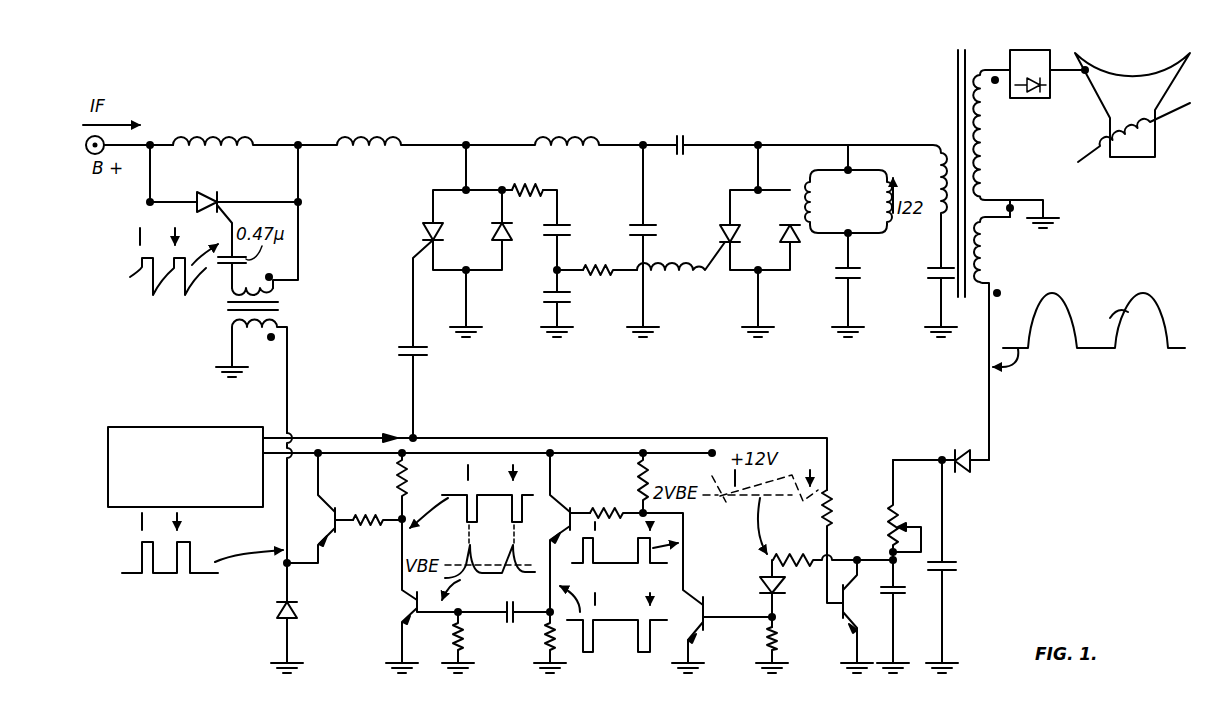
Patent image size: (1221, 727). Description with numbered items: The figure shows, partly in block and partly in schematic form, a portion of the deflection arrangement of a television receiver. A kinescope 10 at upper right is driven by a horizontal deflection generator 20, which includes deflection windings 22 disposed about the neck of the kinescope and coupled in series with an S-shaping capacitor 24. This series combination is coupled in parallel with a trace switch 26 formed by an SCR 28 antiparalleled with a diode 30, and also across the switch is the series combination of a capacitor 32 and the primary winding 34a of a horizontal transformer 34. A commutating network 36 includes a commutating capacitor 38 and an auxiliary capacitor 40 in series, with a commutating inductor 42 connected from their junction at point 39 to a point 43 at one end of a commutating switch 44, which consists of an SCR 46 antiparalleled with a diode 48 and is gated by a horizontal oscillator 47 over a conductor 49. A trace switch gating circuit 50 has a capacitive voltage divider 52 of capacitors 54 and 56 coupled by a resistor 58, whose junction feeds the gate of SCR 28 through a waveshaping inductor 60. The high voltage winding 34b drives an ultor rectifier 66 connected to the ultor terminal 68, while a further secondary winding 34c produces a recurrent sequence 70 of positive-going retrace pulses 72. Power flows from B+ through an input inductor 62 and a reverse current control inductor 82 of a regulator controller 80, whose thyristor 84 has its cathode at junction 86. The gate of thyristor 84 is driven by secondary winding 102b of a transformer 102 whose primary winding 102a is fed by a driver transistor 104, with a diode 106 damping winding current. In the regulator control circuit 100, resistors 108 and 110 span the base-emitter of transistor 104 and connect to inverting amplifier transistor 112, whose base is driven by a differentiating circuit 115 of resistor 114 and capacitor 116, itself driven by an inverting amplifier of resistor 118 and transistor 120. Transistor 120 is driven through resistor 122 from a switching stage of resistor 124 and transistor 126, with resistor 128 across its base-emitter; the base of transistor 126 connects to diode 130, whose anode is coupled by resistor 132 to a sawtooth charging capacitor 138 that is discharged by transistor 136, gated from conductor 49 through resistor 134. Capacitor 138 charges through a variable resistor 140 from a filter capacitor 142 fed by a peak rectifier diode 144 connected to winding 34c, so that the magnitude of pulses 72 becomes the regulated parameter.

The kinescope 10 is at (1108, 118).
The horizontal deflection switch or deflection generator 20 is at (648, 113).
The deflection windings 22 is at (860, 198).
The S-shaping capacitor 24 is at (858, 276).
The trace switch 26 is at (772, 217).
The SCR or thyristor 28 is at (726, 230).
The diode 30 is at (783, 247).
The capacitor 32 is at (936, 275).
The horizontal transformer 34 is at (940, 90).
The primary winding 34a is at (939, 186).
The high voltage winding 34b is at (986, 157).
The further secondary winding 34c is at (986, 274).
The commutating network 36 is at (608, 183).
The commutating capacitor 38 is at (677, 157).
The point 39 is at (645, 144).
The auxiliary capacitor 40 is at (641, 230).
The commutating inductor 42 is at (582, 147).
The point 43 is at (465, 148).
The commutating switch 44 is at (482, 214).
The SCR 46 is at (432, 228).
The horizontal oscillator 47 is at (170, 427).
The diode 48 is at (493, 236).
The conductor 49 is at (344, 437).
The trace switch gating circuit 50 is at (610, 256).
The capacitive voltage divider 52 is at (543, 279).
The capacitor 54 is at (556, 232).
The capacitor 56 is at (547, 297).
The resistor 58 is at (543, 192).
The inductor 60 is at (696, 272).
The input inductor 62 is at (375, 140).
The ultor rectifier 66 is at (1015, 50).
The ultor terminal 68 is at (1086, 73).
The recurrent sequence 70 is at (1105, 297).
The retrace pulses 72 is at (1080, 322).
The regulator controller 80 is at (243, 113).
The reverse current control inductor 82 is at (214, 152).
The thyristor 84 is at (197, 205).
The junction 86 is at (299, 144).
The regulator control circuit 100 is at (660, 422).
The transformer 102 is at (342, 311).
The primary winding 102a is at (232, 333).
The secondary winding 102b is at (276, 285).
The driver transistor 104 is at (336, 530).
The diode 106 is at (280, 612).
The resistor 108 is at (380, 510).
The resistor 110 is at (398, 474).
The inverting amplifier transistor 112 is at (413, 605).
The resistor 114 is at (456, 632).
The differentiating circuit 115 is at (505, 642).
The capacitor 116 is at (529, 622).
The resistor 118 is at (545, 652).
The transistor 120 is at (573, 505).
The resistor 122 is at (620, 508).
The resistor 124 is at (643, 490).
The transistor 126 is at (705, 630).
The resistor 128 is at (781, 642).
The diode 130 is at (776, 600).
The resistor 132 is at (798, 566).
The resistor 134 is at (832, 503).
The discharging transistor 136 is at (852, 610).
The sawtooth charging capacitor 138 is at (898, 598).
The variable resistor 140 is at (911, 523).
The filter capacitor 142 is at (950, 560).
The peak rectifier diode 144 is at (965, 473).